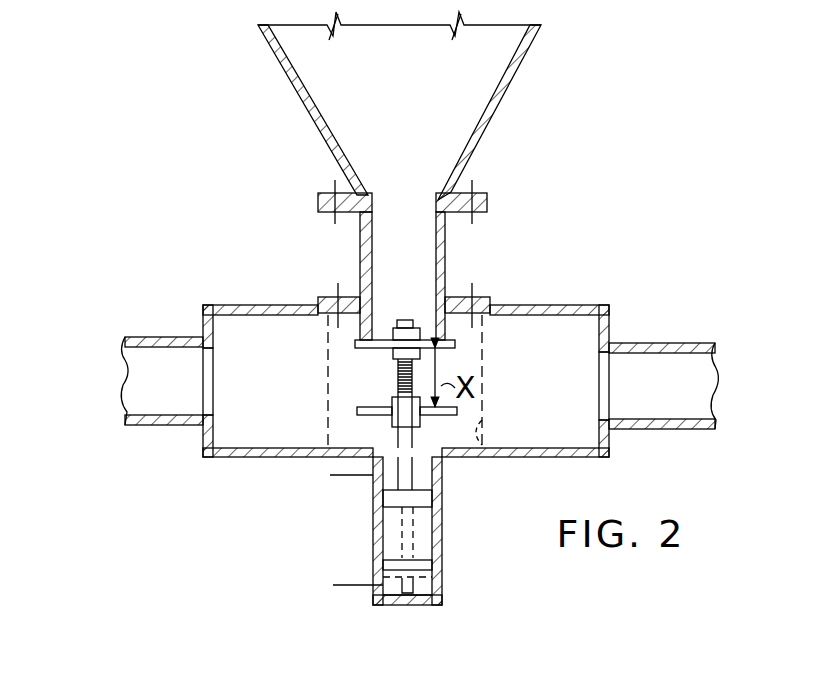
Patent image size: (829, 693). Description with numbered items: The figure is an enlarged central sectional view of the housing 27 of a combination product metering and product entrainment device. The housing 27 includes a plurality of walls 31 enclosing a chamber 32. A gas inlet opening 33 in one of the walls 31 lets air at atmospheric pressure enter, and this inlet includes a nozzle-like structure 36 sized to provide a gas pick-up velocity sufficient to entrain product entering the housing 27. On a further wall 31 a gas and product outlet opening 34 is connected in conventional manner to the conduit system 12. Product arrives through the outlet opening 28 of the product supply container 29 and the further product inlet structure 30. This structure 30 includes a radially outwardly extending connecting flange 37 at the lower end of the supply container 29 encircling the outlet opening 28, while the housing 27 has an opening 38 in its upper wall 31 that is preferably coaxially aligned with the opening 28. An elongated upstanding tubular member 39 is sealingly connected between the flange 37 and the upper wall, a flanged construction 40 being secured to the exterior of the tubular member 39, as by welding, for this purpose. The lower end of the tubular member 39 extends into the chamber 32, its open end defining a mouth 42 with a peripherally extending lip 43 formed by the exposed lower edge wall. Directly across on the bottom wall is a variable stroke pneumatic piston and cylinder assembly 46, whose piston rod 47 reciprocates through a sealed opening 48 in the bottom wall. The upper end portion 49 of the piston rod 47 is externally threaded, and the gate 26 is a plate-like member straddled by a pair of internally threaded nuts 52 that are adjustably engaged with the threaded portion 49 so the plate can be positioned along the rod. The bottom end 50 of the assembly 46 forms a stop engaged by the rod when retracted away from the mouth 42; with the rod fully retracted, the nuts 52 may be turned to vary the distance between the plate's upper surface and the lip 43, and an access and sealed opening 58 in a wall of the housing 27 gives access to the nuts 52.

The conduit system 12 is at (700, 342).
The gate 26 is at (460, 353).
The housing 27 is at (244, 300).
The outlet opening 28 is at (418, 198).
The product supply container 29 is at (505, 84).
The further product inlet structure 30 is at (462, 253).
The walls 31 is at (273, 305).
The chamber 32 is at (290, 430).
The gas inlet opening 33 is at (210, 377).
The gas and product outlet opening 34 is at (608, 387).
The nozzle-like structure 36 is at (198, 358).
The connecting flange 37 is at (485, 201).
The opening 38 is at (433, 313).
The tubular member 39 is at (450, 279).
The flanged construction 40 is at (478, 300).
The mouth 42 is at (398, 380).
The lip 43 is at (357, 356).
The piston and cylinder assembly 46 is at (445, 577).
The piston rod 47 is at (422, 477).
The sealed opening 48 is at (402, 478).
The upper end portion 49 is at (358, 410).
The bottom end 50 is at (415, 600).
The nuts 52 is at (417, 338).
The access and sealed opening 58 is at (483, 448).